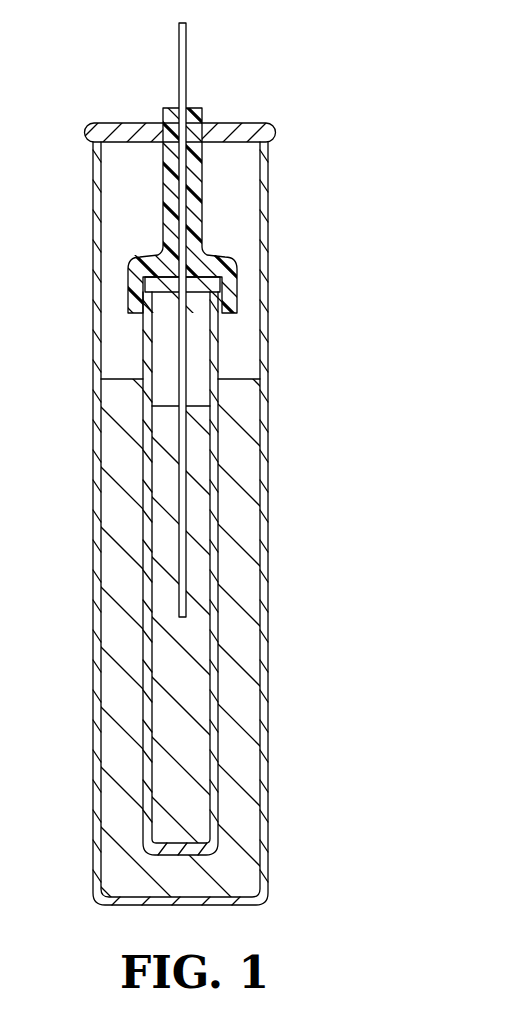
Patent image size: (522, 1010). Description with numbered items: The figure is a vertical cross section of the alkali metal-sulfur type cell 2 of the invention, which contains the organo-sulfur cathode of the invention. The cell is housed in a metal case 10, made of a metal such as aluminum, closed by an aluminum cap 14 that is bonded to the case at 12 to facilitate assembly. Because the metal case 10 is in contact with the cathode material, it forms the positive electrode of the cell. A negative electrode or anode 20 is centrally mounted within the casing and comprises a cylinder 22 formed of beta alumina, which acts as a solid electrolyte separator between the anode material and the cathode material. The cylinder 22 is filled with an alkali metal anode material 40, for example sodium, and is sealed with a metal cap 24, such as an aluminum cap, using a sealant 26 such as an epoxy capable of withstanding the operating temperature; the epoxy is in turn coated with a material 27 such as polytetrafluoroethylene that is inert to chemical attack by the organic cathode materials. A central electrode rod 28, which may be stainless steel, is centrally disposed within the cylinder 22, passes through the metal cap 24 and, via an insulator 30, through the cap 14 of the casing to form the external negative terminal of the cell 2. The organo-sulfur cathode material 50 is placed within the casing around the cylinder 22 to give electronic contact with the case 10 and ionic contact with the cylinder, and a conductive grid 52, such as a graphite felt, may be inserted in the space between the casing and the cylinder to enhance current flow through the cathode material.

The alkali metal-sulfur type cell 2 is at (261, 503).
The metal case 10 is at (268, 453).
The bond 12 is at (206, 115).
The aluminum cap 14 is at (250, 122).
The negative electrode (anode) 20 is at (236, 538).
The cylinder 22 is at (220, 542).
The metal cap 24 is at (198, 275).
The sealant 26 is at (233, 298).
The coating material 27 is at (200, 195).
The central electrode rod 28 is at (187, 48).
The insulator 30 is at (203, 113).
The alkali metal anode material 40 is at (197, 635).
The organo-sulfur cathode material 50 is at (261, 650).
The conductive grid 52 is at (247, 775).